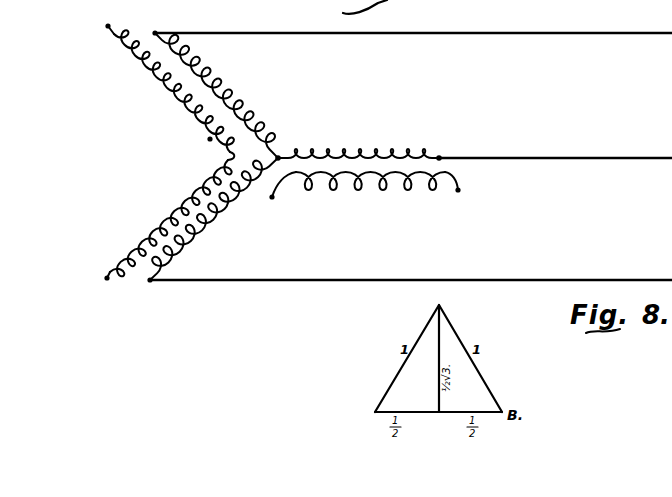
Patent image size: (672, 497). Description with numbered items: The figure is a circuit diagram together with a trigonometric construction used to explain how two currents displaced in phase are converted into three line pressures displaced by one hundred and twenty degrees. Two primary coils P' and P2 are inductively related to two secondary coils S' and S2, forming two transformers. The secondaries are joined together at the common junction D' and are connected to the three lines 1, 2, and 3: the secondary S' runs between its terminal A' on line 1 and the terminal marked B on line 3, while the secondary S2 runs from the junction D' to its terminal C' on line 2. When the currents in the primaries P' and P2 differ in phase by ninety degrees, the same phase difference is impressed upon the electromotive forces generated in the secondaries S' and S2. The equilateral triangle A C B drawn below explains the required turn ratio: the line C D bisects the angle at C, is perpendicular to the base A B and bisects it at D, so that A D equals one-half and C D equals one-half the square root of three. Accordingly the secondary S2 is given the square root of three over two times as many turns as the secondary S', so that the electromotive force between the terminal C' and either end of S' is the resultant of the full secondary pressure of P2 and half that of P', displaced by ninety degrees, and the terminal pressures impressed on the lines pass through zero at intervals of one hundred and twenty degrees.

The line 1 is at (413, 26).
The line 2 is at (555, 149).
The line 3 is at (411, 271).
The terminal A' is at (149, 27).
The triangle vertex B is at (156, 288).
The terminal C' is at (447, 150).
The junction point D' is at (285, 149).
The secondary coil S' is at (214, 151).
The secondary coil S2 is at (358, 142).
The primary coil P' is at (171, 151).
The primary coil P2 is at (364, 191).
The triangle vertex A is at (425, 419).
The triangle apex C is at (438, 351).
The foot of perpendicular D is at (438, 369).